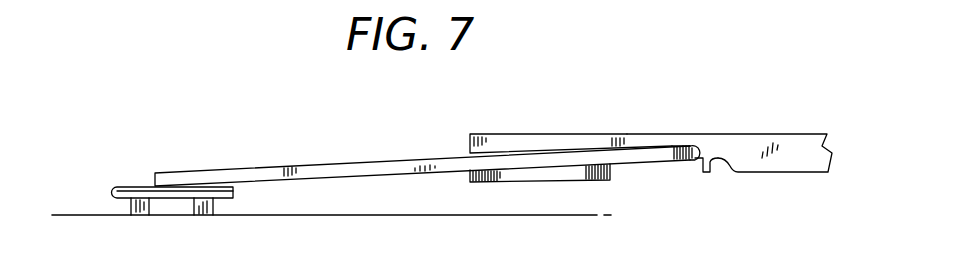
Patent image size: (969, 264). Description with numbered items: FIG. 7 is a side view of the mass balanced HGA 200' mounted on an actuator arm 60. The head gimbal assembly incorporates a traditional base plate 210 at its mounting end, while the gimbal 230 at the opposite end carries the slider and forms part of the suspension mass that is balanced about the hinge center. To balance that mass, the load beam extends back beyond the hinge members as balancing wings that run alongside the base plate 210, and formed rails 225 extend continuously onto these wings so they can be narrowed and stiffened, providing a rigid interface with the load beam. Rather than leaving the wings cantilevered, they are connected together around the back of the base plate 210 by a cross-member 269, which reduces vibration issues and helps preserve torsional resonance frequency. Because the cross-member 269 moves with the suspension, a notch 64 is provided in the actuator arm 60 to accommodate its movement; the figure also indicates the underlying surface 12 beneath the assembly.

The substrate / base surface 12 is at (340, 218).
The gimbal 230 is at (125, 187).
The rails 225 is at (325, 171).
The base plate 210 is at (518, 178).
The mass balanced HGA 200' is at (571, 95).
The actuator arm 60 is at (747, 147).
The notch 64 is at (718, 165).
The cross-member 269 is at (672, 161).